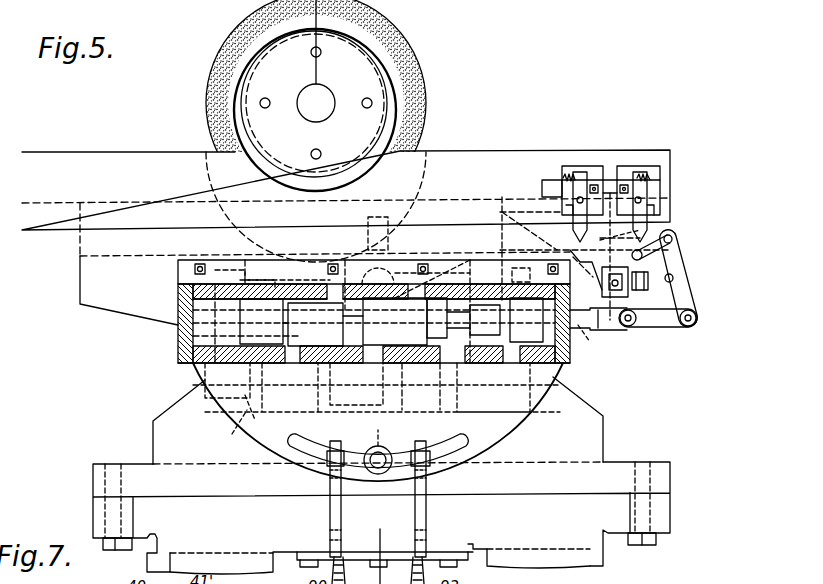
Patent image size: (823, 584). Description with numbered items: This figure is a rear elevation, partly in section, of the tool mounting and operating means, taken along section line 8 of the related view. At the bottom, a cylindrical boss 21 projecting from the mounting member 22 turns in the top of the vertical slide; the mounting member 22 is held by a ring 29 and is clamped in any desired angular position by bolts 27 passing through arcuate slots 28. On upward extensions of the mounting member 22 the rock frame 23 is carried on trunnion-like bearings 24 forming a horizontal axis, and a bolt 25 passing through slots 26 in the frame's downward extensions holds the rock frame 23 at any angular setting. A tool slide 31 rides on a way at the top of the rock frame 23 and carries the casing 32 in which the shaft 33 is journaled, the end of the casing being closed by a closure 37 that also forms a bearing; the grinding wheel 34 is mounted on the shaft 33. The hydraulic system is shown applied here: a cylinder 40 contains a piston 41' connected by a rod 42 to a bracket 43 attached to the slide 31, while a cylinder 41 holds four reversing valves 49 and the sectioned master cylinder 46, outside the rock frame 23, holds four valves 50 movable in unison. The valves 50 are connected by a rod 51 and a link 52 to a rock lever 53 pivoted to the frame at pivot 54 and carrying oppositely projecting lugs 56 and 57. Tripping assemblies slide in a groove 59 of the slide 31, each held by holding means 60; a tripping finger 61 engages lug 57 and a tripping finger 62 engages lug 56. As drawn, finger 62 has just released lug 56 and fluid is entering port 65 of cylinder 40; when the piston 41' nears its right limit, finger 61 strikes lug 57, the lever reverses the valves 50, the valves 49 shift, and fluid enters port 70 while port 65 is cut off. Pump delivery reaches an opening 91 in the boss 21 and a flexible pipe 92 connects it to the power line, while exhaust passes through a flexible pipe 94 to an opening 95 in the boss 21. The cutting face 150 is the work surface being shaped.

The section line 8 is at (326, 23).
The cylindrical boss 21 is at (450, 512).
The mounting member 22 is at (183, 402).
The rock frame 23 is at (110, 298).
The trunnion-like bearings 24 is at (393, 272).
The bolt 25 is at (378, 474).
The slots 26 is at (458, 450).
The bolts 27 is at (116, 546).
The arcuate slots 28 is at (100, 512).
The ring 29 is at (316, 550).
The tool slide 31 is at (502, 163).
The casing 32 is at (315, 103).
The shaft 33 is at (321, 93).
The grinding wheel 34 is at (430, 80).
The casing end closure 37 is at (378, 50).
The cylinder 40 is at (178, 337).
The cylinder 41 is at (226, 432).
The piston 41' is at (285, 256).
The rod 42 is at (598, 336).
The bracket 43 is at (645, 228).
The master cylinder 46 is at (178, 293).
The valves 49 is at (303, 410).
The valves 50 is at (391, 322).
The rod 51 is at (608, 325).
The link 52 is at (688, 328).
The rock lever 53 is at (690, 300).
The pivot 54 is at (676, 278).
The lug 56 is at (632, 255).
The lug 57 is at (672, 242).
The groove 59 is at (548, 181).
The holding means 60 is at (623, 184).
The tripping finger 61 is at (583, 215).
The tripping finger 62 is at (642, 200).
The port 65 is at (277, 387).
The port 70 is at (492, 383).
The opening 91 is at (342, 522).
The flexible pipe 92 is at (338, 449).
The flexible pipe 94 is at (420, 449).
The opening 95 is at (430, 483).
The cutting face 150 is at (387, 216).